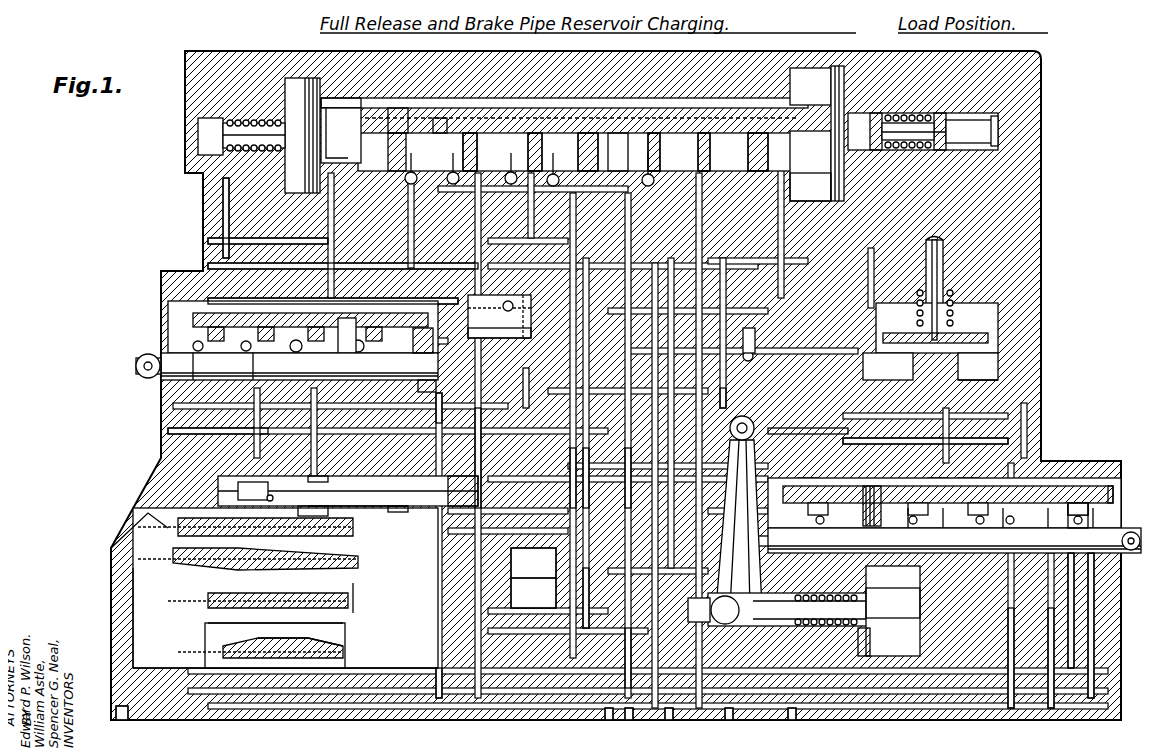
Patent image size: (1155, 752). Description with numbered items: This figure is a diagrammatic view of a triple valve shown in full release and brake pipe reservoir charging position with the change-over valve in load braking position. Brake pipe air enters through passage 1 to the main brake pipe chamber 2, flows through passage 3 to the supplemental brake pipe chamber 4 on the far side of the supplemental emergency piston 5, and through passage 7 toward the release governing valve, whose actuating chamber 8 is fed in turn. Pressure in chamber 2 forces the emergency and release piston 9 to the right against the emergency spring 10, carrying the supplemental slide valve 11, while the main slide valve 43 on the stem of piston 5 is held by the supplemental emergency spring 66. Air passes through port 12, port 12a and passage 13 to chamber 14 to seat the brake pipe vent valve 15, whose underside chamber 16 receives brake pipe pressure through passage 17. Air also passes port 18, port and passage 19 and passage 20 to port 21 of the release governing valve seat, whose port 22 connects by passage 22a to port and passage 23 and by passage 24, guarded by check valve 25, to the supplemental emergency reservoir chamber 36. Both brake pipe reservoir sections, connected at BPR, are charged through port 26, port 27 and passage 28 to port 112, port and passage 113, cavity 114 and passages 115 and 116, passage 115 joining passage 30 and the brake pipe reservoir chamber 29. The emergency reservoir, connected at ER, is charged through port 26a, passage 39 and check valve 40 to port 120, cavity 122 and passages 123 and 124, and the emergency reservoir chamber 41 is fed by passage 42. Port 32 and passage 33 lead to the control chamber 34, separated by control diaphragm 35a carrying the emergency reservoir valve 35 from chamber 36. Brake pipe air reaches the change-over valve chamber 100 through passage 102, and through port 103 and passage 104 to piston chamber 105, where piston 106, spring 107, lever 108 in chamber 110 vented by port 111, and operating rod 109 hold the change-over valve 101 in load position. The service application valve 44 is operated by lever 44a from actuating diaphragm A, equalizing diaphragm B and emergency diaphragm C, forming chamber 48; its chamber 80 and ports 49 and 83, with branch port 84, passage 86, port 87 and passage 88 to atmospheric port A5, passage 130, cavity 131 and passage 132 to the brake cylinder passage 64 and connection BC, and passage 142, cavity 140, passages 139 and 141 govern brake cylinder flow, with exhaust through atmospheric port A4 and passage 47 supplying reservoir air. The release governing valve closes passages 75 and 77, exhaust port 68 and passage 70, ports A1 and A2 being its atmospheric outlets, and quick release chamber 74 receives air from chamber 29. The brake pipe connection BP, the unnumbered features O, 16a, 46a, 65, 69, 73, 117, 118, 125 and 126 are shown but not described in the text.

The brake pipe passage 1 is at (153, 410).
The main brake pipe chamber 2 is at (340, 90).
The passage 3 is at (215, 195).
The supplemental brake pipe chamber 4 is at (200, 160).
The supplemental emergency piston 5 is at (295, 75).
The passage 7 is at (340, 285).
The actuating chamber 8 is at (313, 508).
The emergency and release piston 9 is at (832, 60).
The emergency spring 10 is at (910, 108).
The supplemental slide valve 11 is at (745, 92).
The port of the supplemental slide valve 12 is at (497, 112).
The port of the main slide valve 12a is at (460, 125).
The passage 13 is at (440, 180).
The vent valve chamber 14 is at (960, 310).
The brake pipe vent valve 15 is at (965, 325).
The chamber beneath the vent valve 16 is at (975, 352).
The seat 16a is at (990, 368).
The passage 17 is at (905, 360).
The port of the supplemental slide valve 18 is at (610, 125).
The port and passage of the main slide valve 19 is at (575, 125).
The passage 20 is at (165, 222).
The port 21 is at (242, 366).
The port 22 is at (203, 366).
The passage 22a is at (200, 255).
The port and passage of the main slide valve 23 is at (528, 125).
The passage 24 is at (355, 722).
The check valve 25 is at (750, 345).
The port of the supplemental slide valve 26 is at (695, 125).
The port of the main slide valve 26a is at (645, 125).
The port of the main slide valve 27 is at (745, 125).
The passage 28 is at (770, 110).
The brake pipe reservoir chamber 29 is at (870, 105).
The brake pipe reservoir passage 30 is at (860, 190).
The port of the main slide valve 32 is at (503, 180).
The passage 33 is at (175, 660).
The emergency reservoir control chamber 34 is at (235, 660).
The emergency reservoir valve 35 is at (270, 655).
The control diaphragm 35a is at (261, 645).
The supplemental emergency reservoir chamber 36 is at (318, 650).
The passage 39 is at (420, 305).
The check valve 40 is at (425, 312).
The emergency reservoir chamber 41 is at (125, 560).
The passage 42 is at (440, 700).
The main slide valve 43 is at (390, 115).
The service application valve 44 is at (348, 486).
The lever 44a is at (358, 494).
The diaphragm 46a is at (165, 545).
The passage 47 is at (403, 458).
The high pressure equalizing brake cylinder chamber 48 is at (165, 520).
The port of the service valve seat 49 is at (555, 478).
The brake cylinder passage 64 is at (617, 640).
The stem 65 is at (345, 592).
The supplemental emergency spring 66 is at (245, 110).
The brake cylinder exhaust port 68 is at (416, 360).
The slide valve 69 is at (185, 310).
The passage 70 is at (325, 345).
The passage 73 is at (445, 394).
The quick release chamber 74 is at (499, 330).
The passage 75 is at (518, 372).
The passage 77 is at (200, 408).
The chamber of the service valve 80 is at (392, 498).
The port 83 is at (533, 578).
The port 84 is at (533, 600).
The passage 86 is at (503, 640).
The port and passage of the main slide valve 87 is at (432, 120).
The passage 88 is at (341, 135).
The change-over valve chamber 100 is at (1080, 465).
The change-over valve 101 is at (1126, 485).
The passage 102 is at (600, 478).
The port of the change-over valve 103 is at (930, 478).
The passage 104 is at (893, 611).
The piston chamber 105 is at (893, 603).
The piston 106 is at (881, 636).
The spring 107 is at (780, 609).
The lever 108 is at (739, 512).
The operating rod 109 is at (1048, 526).
The chamber 110 is at (774, 406).
The open port 111 is at (1000, 433).
The port 112 is at (910, 526).
The port and passage of the change-over valve 113 is at (960, 478).
The cavity 114 is at (986, 491).
The passage 115 is at (940, 630).
The passage 116 is at (1000, 640).
The port 117 is at (1005, 526).
The port 118 is at (940, 500).
The port 120 is at (1090, 505).
The cavity 122 is at (1100, 490).
The passage 123 is at (1086, 572).
The passage 124 is at (1066, 610).
The port 125 is at (1094, 526).
The slide valve 126 is at (1070, 478).
The passage 130 is at (693, 478).
The cavity 131 is at (800, 480).
The port and passage 132 is at (800, 425).
The passage 139 is at (528, 640).
The cavity 140 is at (858, 515).
The passage 141 is at (599, 505).
The passage 142 is at (594, 590).
The actuating diaphragm A is at (175, 520).
The atmospheric port A1 is at (160, 348).
The atmospheric port A2 is at (810, 187).
The atmospheric port A4 is at (544, 180).
The atmospheric port A5 is at (405, 180).
The high pressure equalizing diaphragm B is at (130, 510).
The emergency diaphragm C is at (258, 595).
The chamber O is at (175, 300).
The brake pipe connection BP is at (125, 724).
The equalizing reservoir connection ER is at (700, 730).
The brake cylinder connection BC is at (637, 722).
The brake pipe reservoir connection BPR is at (704, 730).